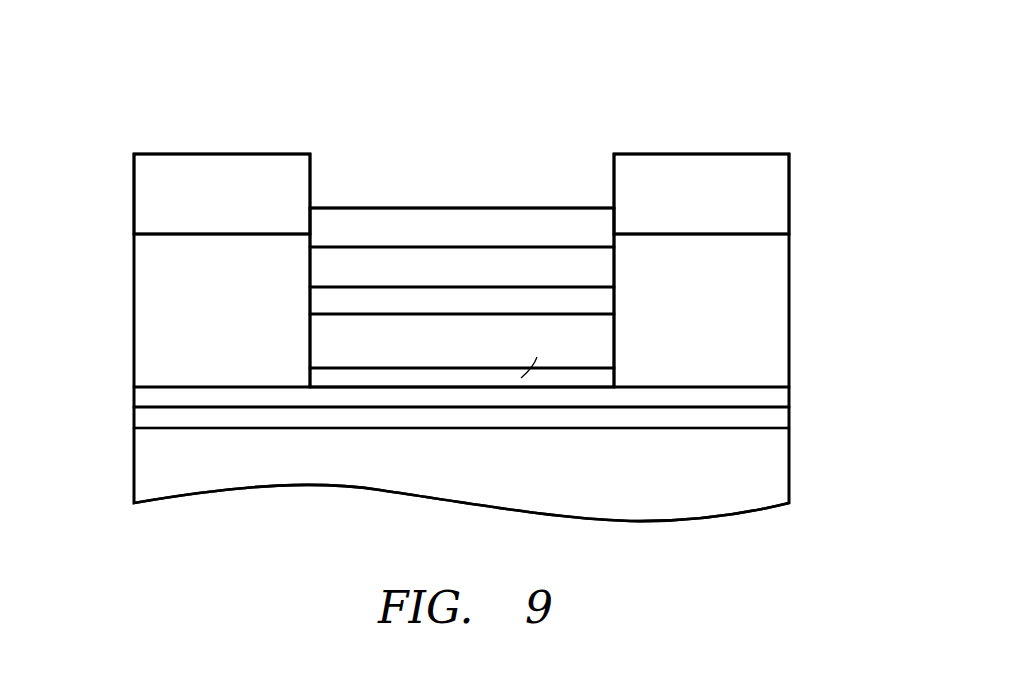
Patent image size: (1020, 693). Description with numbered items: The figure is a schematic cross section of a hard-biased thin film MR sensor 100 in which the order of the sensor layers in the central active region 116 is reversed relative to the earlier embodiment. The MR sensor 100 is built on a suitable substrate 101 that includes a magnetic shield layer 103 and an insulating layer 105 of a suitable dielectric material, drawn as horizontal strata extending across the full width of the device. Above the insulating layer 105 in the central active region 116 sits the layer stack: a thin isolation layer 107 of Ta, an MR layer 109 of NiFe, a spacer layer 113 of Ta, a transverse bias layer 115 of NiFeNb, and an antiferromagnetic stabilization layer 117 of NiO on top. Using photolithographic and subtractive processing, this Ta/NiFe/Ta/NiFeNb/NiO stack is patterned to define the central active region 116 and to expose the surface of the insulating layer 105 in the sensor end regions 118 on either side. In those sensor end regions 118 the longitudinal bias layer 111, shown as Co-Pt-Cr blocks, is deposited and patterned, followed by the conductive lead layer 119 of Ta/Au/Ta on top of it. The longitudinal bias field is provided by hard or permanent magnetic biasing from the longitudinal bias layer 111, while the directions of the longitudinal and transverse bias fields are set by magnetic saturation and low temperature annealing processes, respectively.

The MR sensor 100 is at (106, 310).
The substrate 101 is at (772, 518).
The magnetic shield layer 103 is at (790, 418).
The insulating layer 105 is at (790, 398).
The isolation layer 107 is at (607, 379).
The MR layer 109 is at (606, 329).
The longitudinal bias layer 111 is at (134, 254).
The spacer layer 113 is at (607, 297).
The transverse bias layer 115 is at (607, 263).
The central active region 116 is at (477, 143).
The antiferromagnetic stabilization layer 117 is at (390, 205).
The sensor end regions 118 is at (213, 112).
The conductive lead layer 119 is at (134, 192).